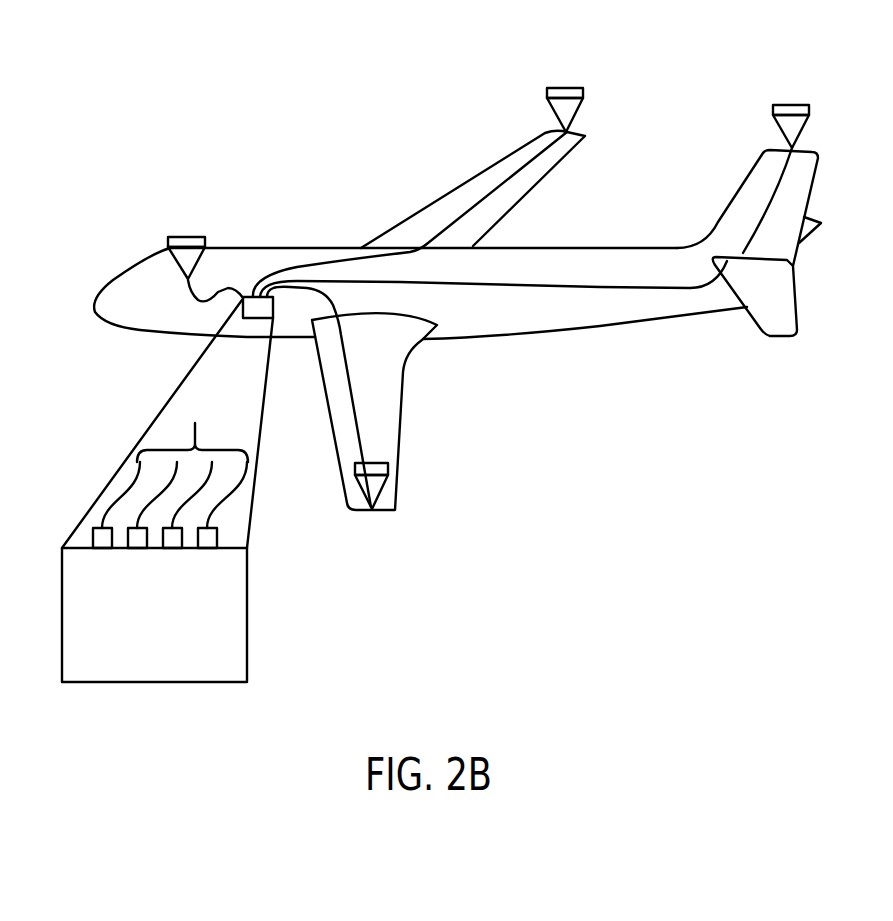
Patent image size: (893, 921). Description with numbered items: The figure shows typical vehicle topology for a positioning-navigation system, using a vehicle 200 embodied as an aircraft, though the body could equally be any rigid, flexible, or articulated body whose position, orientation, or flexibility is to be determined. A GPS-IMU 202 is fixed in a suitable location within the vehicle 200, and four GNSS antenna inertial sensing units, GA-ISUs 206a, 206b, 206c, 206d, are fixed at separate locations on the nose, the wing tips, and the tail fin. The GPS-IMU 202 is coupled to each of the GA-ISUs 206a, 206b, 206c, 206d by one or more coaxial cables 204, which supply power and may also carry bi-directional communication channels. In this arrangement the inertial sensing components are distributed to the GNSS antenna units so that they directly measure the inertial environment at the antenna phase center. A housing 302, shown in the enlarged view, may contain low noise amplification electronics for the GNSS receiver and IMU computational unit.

The vehicle 200 is at (556, 334).
The GPS-IMU 202 is at (242, 300).
The coaxial cable 204 is at (555, 288).
The GA-ISU 206a is at (185, 237).
The GA-ISU 206b is at (577, 87).
The GA-ISU 206c is at (380, 463).
The GA-ISU 206d is at (797, 103).
The housing 302 is at (182, 605).